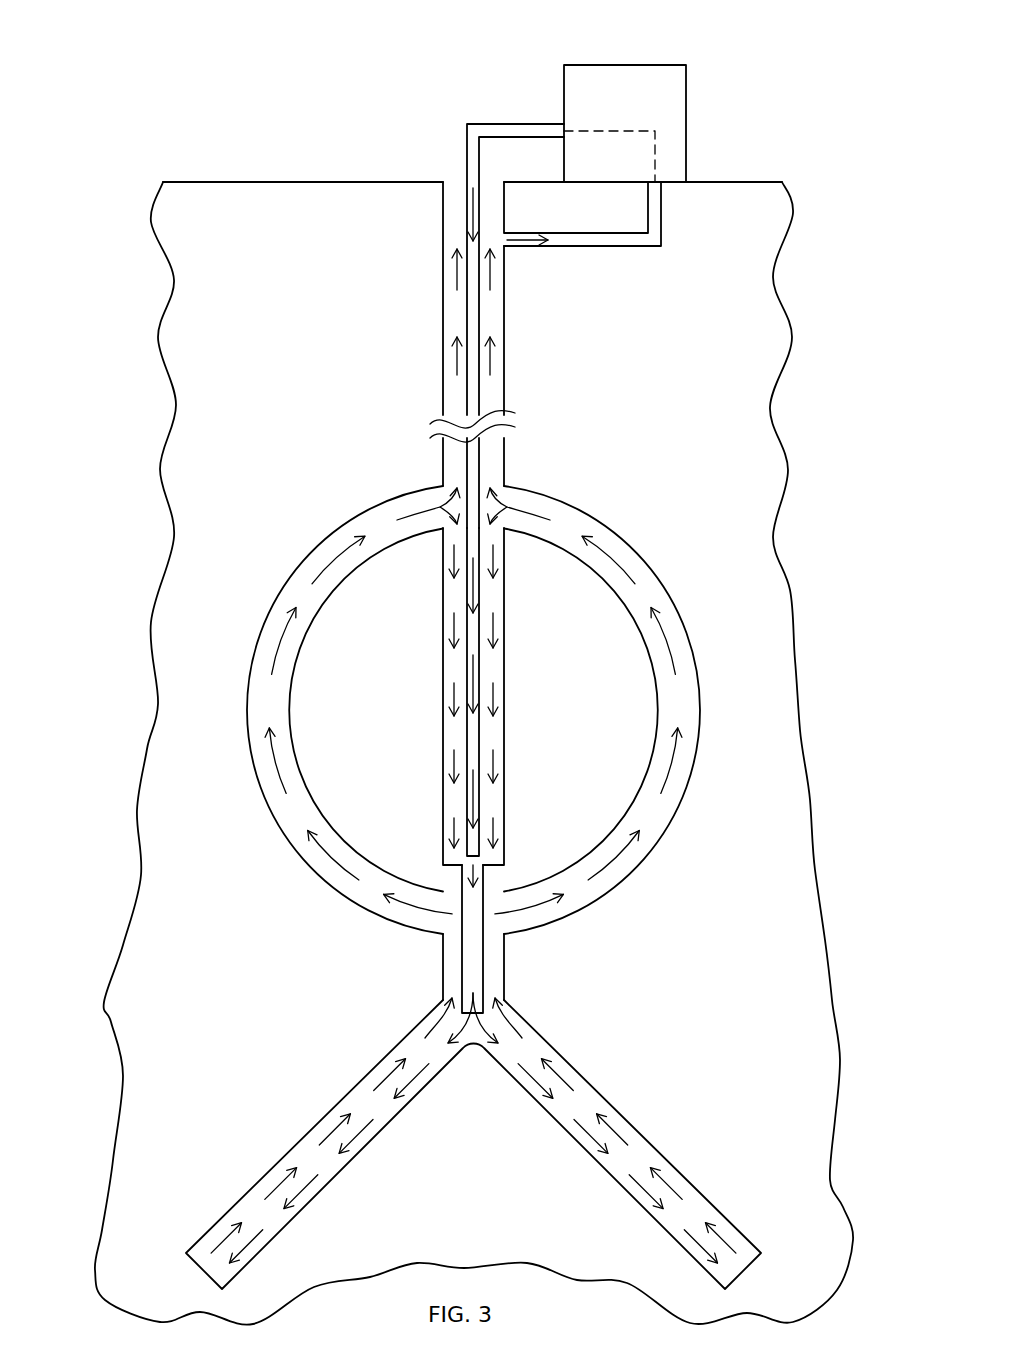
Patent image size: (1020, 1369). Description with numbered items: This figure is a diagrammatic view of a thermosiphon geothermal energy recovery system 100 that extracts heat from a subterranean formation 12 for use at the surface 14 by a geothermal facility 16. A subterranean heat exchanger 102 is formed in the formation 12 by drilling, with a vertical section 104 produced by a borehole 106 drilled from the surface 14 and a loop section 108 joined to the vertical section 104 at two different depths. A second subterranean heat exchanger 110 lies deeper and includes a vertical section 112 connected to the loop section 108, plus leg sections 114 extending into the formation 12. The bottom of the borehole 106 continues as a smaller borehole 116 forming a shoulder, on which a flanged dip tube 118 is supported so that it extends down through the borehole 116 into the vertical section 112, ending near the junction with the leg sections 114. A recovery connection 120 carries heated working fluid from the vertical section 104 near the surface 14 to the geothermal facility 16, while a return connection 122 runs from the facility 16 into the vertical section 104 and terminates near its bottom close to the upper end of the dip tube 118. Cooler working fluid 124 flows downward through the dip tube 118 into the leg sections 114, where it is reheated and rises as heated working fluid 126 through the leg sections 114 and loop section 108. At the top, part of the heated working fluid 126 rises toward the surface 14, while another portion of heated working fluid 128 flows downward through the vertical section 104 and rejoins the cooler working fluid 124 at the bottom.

The subterranean formation 12 is at (219, 858).
The surface 14 is at (268, 180).
The geothermal facility 16 is at (655, 75).
The geothermal energy recovery system 100 is at (174, 67).
The subterranean heat exchanger 102 is at (684, 552).
The vertical section 104 is at (509, 600).
The borehole 106 is at (452, 600).
The loop section 108 is at (262, 682).
The second subterranean heat exchanger 110 is at (717, 1056).
The vertical section 112 is at (496, 967).
The leg sections 114 is at (650, 1130).
The borehole 116 is at (487, 882).
The flanged dip tube 118 is at (460, 972).
The recovery connection 120 is at (625, 248).
The return connection 122 is at (498, 124).
The cooler working fluid 124 is at (465, 213).
The heated working fluid 126 is at (492, 352).
The heated working fluid portion 128 is at (447, 565).